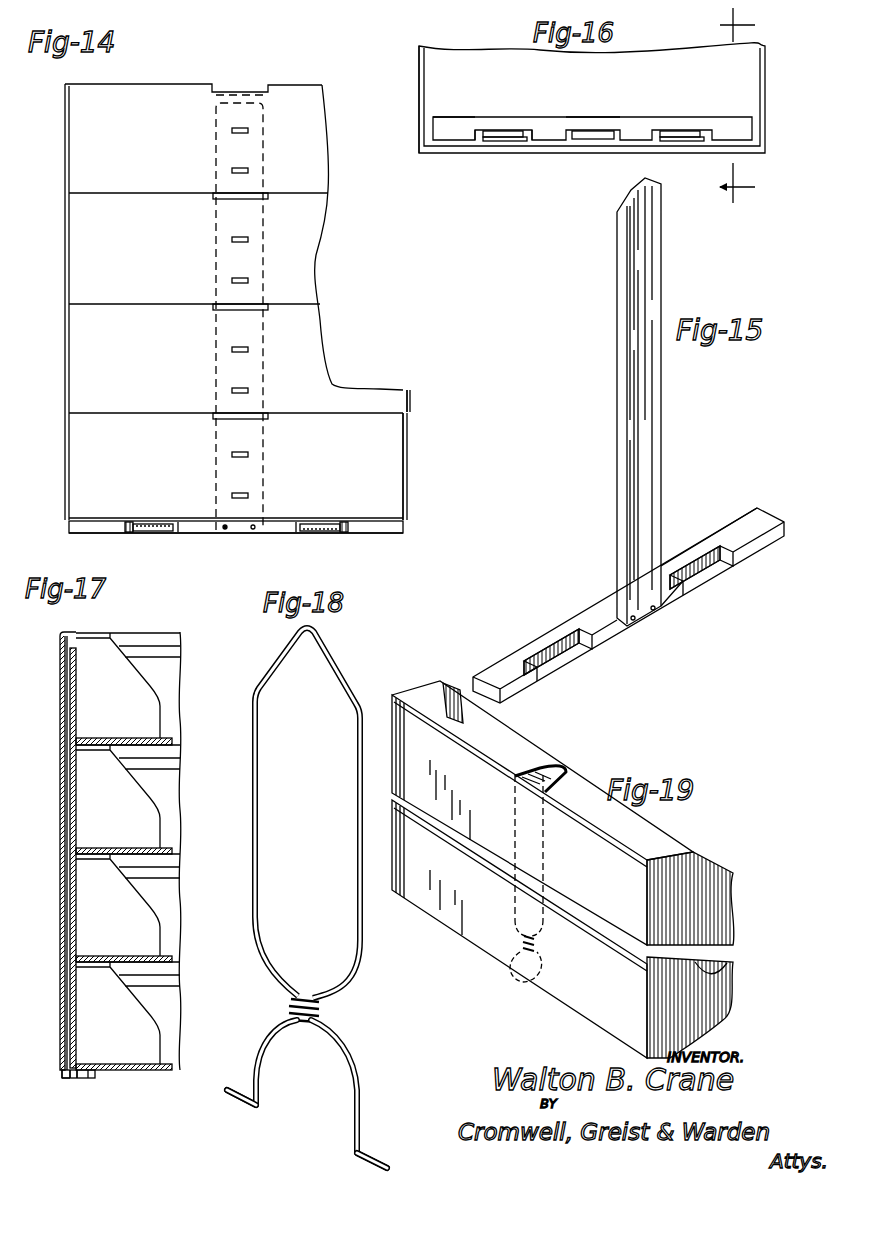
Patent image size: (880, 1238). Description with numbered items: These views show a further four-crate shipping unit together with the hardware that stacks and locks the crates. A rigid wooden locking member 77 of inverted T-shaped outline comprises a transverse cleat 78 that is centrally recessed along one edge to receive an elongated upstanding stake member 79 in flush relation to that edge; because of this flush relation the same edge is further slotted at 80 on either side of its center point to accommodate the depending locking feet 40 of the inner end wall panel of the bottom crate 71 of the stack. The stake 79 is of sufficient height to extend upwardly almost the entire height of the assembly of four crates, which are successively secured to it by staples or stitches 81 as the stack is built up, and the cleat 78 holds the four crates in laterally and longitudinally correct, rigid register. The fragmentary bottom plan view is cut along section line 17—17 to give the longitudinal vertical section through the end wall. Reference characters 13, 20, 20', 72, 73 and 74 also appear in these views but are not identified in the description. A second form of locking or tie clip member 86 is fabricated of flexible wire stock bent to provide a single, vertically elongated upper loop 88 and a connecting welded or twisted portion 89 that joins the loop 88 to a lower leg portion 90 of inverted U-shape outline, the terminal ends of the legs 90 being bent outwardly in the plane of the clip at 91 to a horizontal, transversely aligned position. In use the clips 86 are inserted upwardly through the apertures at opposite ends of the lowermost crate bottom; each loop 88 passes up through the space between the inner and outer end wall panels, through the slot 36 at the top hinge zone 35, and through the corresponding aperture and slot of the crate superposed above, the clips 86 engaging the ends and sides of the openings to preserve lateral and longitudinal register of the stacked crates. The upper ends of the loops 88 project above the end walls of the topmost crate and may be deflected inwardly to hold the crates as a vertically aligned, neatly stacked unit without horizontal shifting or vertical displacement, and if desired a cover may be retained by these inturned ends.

In FIG. 16, the shelf panel 13 is at (755, 92).
In FIG. 16, the section line 17- 17 is at (740, 105).
In FIG. 16, the slide member 20 is at (592, 151).
In FIG. 17, the slide member 20 is at (38, 1079).
In FIG. 16, the slide member 20' is at (603, 135).
In FIG. 19, the top hinge zone 35 is at (477, 743).
In FIG. 19, the slot 36 is at (532, 770).
In FIG. 14, the locking feet 40 is at (172, 533).
In FIG. 16, the locking feet 40 is at (497, 130).
In FIG. 14, the bottom crate 71 is at (64, 201).
In FIG. 16, the bottom crate 71 is at (418, 90).
In FIG. 17, the bottom crate 71 is at (98, 714).
In FIG. 14, the tab 72 is at (222, 84).
In FIG. 17, the tab 72 is at (78, 632).
In FIG. 17, the inner wall 73 is at (76, 689).
In FIG. 14, the outer wall 74 is at (405, 403).
In FIG. 17, the outer wall 74 is at (60, 689).
In FIG. 14, the wooden locking member 77 is at (396, 538).
In FIG. 16, the wooden locking member 77 is at (464, 116).
In FIG. 15, the wooden locking member 77 is at (620, 380).
In FIG. 17, the wooden locking member 77 is at (64, 1082).
In FIG. 14, the transverse cleat 78 is at (398, 527).
In FIG. 16, the transverse cleat 78 is at (640, 122).
In FIG. 15, the transverse cleat 78 is at (603, 610).
In FIG. 17, the transverse cleat 78 is at (94, 1076).
In FIG. 14, the stake member 79 is at (265, 433).
In FIG. 16, the stake member 79 is at (590, 130).
In FIG. 15, the stake member 79 is at (655, 390).
In FIG. 17, the stake member 79 is at (72, 907).
In FIG. 14, the slot 80 is at (128, 533).
In FIG. 16, the slot 80 is at (528, 141).
In FIG. 15, the slot 80 is at (707, 568).
In FIG. 17, the slot 80 is at (73, 1082).
In FIG. 14, the staples or stitches 81 is at (248, 169).
In FIG. 18, the tie clip member 86 is at (252, 733).
In FIG. 19, the tie clip member 86 is at (546, 866).
In FIG. 18, the upper loop 88 is at (352, 716).
In FIG. 18, the twisted portion 89 is at (320, 1008).
In FIG. 18, the lower leg portion 90 is at (357, 1075).
In FIG. 18, the outwardly bent ends 91 is at (238, 1092).